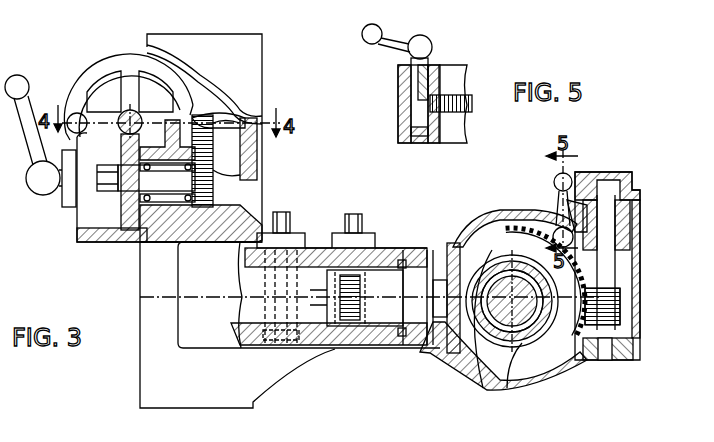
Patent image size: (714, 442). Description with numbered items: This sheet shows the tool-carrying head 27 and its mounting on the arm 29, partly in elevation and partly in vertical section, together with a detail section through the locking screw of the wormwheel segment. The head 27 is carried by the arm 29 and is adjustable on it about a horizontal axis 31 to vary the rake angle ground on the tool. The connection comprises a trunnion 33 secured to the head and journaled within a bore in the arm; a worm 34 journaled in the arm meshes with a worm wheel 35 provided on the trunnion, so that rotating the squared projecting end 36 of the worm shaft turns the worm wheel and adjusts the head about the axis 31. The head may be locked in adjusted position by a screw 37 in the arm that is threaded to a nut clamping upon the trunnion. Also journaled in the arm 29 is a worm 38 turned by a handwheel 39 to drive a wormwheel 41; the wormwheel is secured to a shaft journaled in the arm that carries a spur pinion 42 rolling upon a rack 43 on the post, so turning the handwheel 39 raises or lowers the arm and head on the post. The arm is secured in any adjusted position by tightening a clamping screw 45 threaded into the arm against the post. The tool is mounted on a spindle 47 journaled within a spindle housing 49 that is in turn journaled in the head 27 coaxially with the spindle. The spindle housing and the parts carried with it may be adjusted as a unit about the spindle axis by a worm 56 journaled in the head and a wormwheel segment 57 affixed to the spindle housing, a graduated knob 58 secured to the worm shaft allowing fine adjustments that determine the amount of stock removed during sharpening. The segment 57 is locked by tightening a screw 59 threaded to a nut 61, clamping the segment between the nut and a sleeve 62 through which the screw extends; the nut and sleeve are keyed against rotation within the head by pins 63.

In FIG. 3, the head 27 is at (577, 373).
In FIG. 3, the arm 29 is at (325, 350).
In FIG. 3, the horizontal axis 31 is at (215, 300).
In FIG. 3, the trunnion 33 is at (388, 283).
In FIG. 3, the worm 34 is at (367, 355).
In FIG. 3, the worm wheel 35 is at (357, 350).
In FIG. 3, the squared projecting end 36 is at (354, 214).
In FIG. 3, the screw 37 is at (287, 214).
In FIG. 3, the worm 38 is at (131, 108).
In FIG. 3, the handwheel 39 is at (88, 84).
In FIG. 3, the wormwheel 41 is at (122, 230).
In FIG. 3, the spur pinion 42 is at (243, 188).
In FIG. 3, the rack 43 is at (262, 141).
In FIG. 3, the clamping screw 45 is at (40, 152).
In FIG. 3, the spindle 47 is at (545, 390).
In FIG. 3, the spindle housing 49 is at (488, 387).
In FIG. 3, the worm 56 is at (620, 297).
In FIG. 3, the wormwheel segment 57 is at (612, 340).
In FIG. 5, the wormwheel segment 57 is at (470, 103).
In FIG. 3, the graduated knob 58 is at (635, 190).
In FIG. 3, the screw 59 is at (553, 213).
In FIG. 5, the screw 59 is at (432, 62).
In FIG. 5, the nut 61 is at (424, 140).
In FIG. 5, the sleeve 62 is at (398, 68).
In FIG. 5, the pins 63 is at (398, 110).